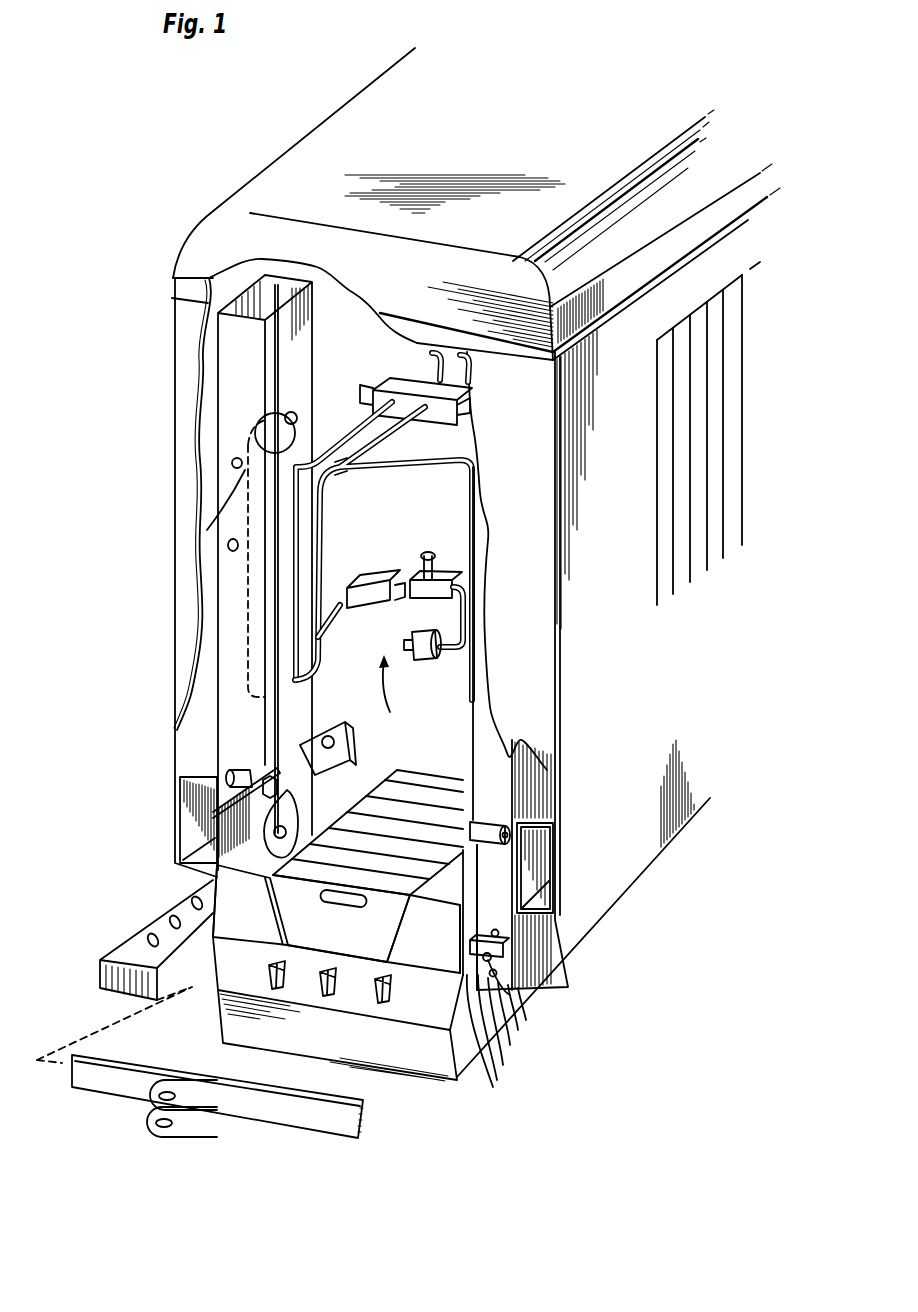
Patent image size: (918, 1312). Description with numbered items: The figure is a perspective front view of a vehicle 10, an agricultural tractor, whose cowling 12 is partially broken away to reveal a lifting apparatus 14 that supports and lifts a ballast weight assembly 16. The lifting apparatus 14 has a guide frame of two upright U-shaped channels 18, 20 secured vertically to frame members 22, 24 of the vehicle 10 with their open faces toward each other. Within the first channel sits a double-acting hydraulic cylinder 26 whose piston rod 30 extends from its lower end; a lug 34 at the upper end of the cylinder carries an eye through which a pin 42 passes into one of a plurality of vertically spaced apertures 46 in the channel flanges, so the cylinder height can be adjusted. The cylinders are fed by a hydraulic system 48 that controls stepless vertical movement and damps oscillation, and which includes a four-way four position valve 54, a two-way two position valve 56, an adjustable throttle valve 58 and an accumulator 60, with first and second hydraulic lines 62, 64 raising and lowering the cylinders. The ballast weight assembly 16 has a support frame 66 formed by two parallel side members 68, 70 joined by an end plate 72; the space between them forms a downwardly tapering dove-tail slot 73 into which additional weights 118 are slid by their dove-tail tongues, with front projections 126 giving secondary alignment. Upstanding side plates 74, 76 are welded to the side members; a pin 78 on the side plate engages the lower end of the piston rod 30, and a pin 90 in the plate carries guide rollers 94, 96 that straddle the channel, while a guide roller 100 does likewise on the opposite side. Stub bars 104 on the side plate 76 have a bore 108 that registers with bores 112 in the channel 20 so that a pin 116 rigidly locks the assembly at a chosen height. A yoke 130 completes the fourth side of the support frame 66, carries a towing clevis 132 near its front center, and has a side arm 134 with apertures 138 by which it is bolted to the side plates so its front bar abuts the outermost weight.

The vehicle 10 is at (296, 135).
The cowling 12 is at (470, 158).
The lifting apparatus 14 is at (228, 661).
The ballast weight assembly 16 is at (600, 952).
The upright channel 18 is at (250, 357).
The upright channel 20 is at (517, 746).
The frame member 22 is at (176, 790).
The frame member 24 is at (557, 838).
The double-acting hydraulic cylinder 26 is at (247, 618).
The piston rod 30 is at (313, 697).
The lug 34 is at (282, 412).
The pin 42 is at (231, 463).
The apertures 46 is at (228, 548).
The hydraulic system 48 is at (398, 693).
The four-way four position valve 54 is at (400, 372).
The two-way two position valve 56 is at (372, 580).
The adjustable throttle valve 58 is at (446, 565).
The accumulator 60 is at (413, 660).
The first hydraulic line 62 is at (345, 472).
The second hydraulic line 64 is at (340, 452).
The support frame 66 is at (230, 882).
The side member 68 is at (259, 933).
The side member 70 is at (442, 950).
The end plate 72 is at (436, 778).
The dove-tail slot 73 is at (397, 942).
The side plate 74 is at (230, 828).
The side plate 76 is at (468, 873).
The pin 78 is at (296, 857).
The pin 90 is at (292, 790).
The guide roller 94 is at (322, 733).
The guide roller 96 is at (241, 770).
The guide roller 100 is at (490, 825).
The stub bar 104 is at (505, 950).
The bore 108 is at (490, 958).
The bores 112 is at (498, 933).
The pin 116 is at (510, 995).
The additional weight 118 is at (488, 1085).
The front projections 126 is at (276, 989).
The yoke 130 is at (77, 1047).
The towing clevis 132 is at (160, 1110).
The side arm 134 is at (145, 938).
The apertures 138 is at (175, 928).